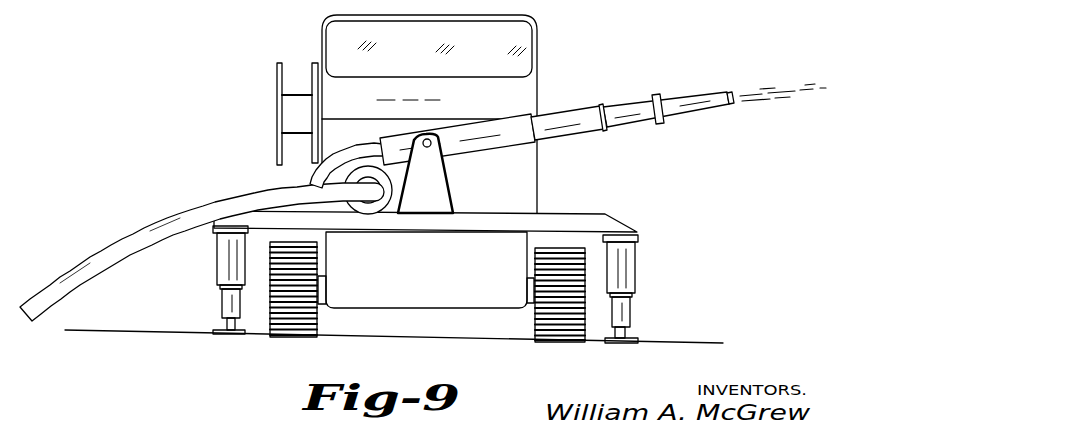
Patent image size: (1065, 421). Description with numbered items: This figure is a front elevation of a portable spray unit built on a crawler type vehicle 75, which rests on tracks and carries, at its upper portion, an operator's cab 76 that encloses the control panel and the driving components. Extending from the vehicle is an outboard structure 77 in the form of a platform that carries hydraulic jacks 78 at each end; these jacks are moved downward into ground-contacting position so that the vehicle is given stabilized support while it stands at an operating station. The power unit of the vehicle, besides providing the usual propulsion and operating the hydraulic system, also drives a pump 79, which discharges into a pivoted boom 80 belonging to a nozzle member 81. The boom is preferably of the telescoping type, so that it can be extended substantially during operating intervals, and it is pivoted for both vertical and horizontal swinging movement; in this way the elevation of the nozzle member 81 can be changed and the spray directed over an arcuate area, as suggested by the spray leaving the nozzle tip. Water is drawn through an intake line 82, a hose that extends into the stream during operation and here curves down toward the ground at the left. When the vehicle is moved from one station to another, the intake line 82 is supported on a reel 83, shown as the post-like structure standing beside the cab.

The crawler type vehicle 75 is at (441, 278).
The operator's cab 76 is at (539, 37).
The outboard structure 77 is at (608, 221).
The hydraulic jacks 78 is at (228, 267).
The pump 79 is at (398, 194).
The pivoted boom 80 is at (434, 138).
The nozzle member 81 is at (684, 106).
The intake line 82 is at (108, 256).
The reel 83 is at (285, 97).